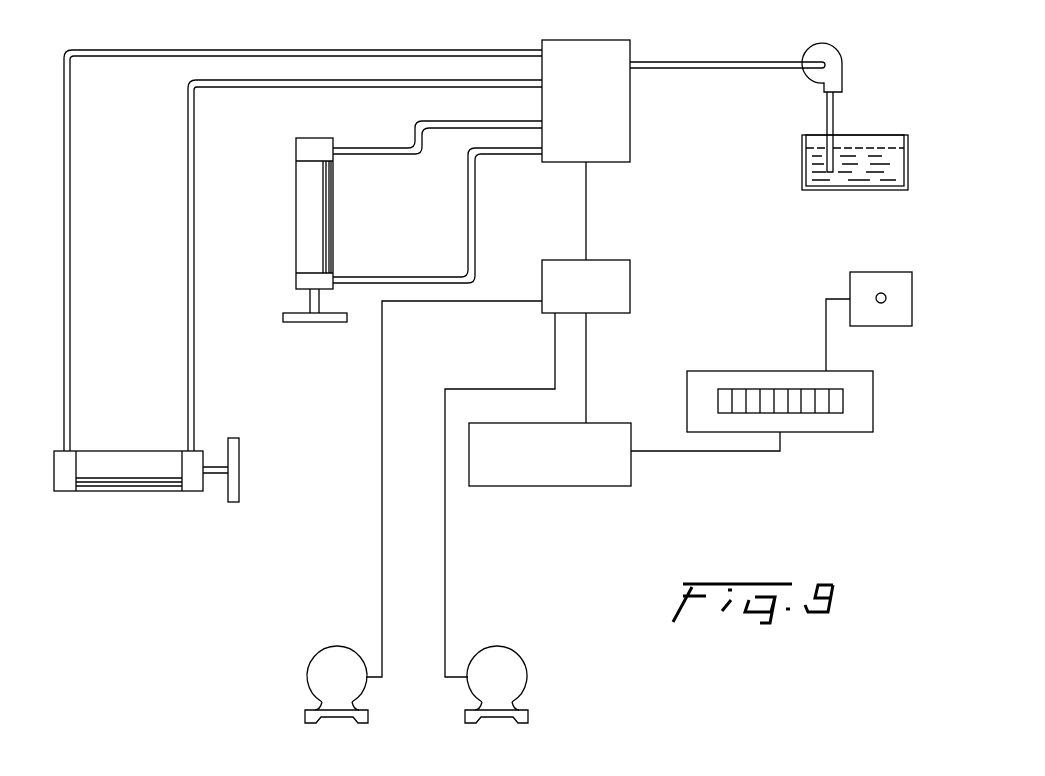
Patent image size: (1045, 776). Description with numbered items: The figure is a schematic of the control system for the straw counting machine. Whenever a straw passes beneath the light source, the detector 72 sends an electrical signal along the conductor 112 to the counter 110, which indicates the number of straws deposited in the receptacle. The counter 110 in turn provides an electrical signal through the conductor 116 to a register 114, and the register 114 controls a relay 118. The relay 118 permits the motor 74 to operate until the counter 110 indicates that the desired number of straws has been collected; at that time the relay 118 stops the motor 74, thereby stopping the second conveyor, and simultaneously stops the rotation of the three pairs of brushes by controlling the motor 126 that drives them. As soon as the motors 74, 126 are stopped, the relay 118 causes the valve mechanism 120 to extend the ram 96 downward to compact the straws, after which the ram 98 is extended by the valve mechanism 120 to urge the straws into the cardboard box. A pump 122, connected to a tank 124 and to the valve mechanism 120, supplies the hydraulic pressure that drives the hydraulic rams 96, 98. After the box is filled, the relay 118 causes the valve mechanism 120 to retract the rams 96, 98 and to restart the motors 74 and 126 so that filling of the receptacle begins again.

The detector 72 is at (904, 277).
The motor 74 is at (318, 670).
The ram 96 is at (303, 215).
The ram 98 is at (120, 485).
The counter 110 is at (840, 422).
The conductor 112 is at (826, 324).
The register 114 is at (555, 478).
The conductor 116 is at (725, 451).
The relay 118 is at (622, 290).
The valve mechanism 120 is at (617, 103).
The pump 122 is at (833, 60).
The tank 124 is at (895, 163).
The motor 126 is at (515, 670).